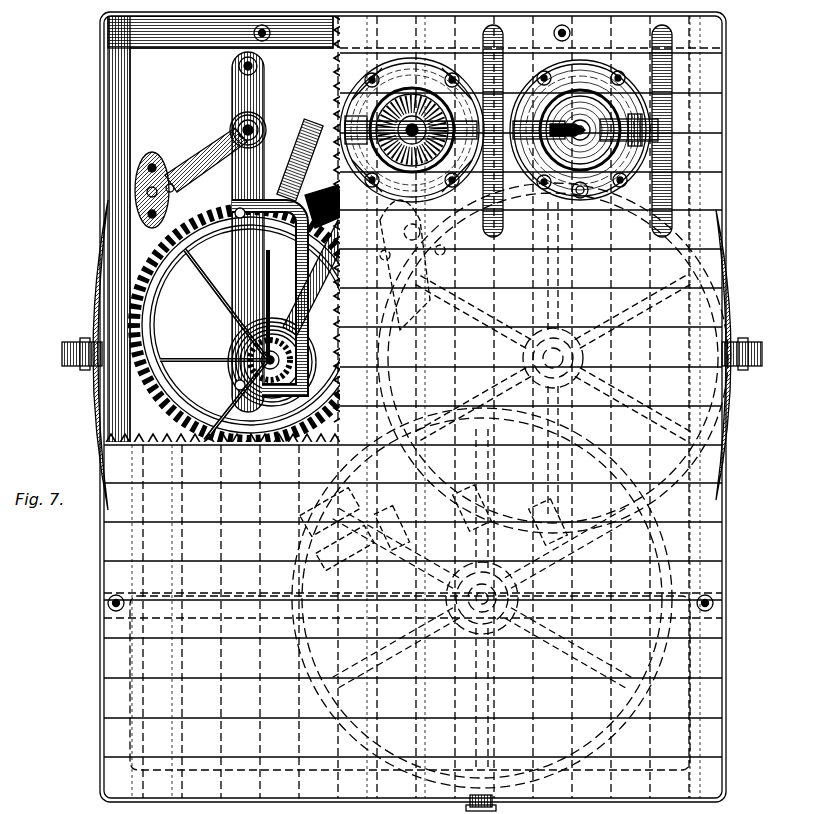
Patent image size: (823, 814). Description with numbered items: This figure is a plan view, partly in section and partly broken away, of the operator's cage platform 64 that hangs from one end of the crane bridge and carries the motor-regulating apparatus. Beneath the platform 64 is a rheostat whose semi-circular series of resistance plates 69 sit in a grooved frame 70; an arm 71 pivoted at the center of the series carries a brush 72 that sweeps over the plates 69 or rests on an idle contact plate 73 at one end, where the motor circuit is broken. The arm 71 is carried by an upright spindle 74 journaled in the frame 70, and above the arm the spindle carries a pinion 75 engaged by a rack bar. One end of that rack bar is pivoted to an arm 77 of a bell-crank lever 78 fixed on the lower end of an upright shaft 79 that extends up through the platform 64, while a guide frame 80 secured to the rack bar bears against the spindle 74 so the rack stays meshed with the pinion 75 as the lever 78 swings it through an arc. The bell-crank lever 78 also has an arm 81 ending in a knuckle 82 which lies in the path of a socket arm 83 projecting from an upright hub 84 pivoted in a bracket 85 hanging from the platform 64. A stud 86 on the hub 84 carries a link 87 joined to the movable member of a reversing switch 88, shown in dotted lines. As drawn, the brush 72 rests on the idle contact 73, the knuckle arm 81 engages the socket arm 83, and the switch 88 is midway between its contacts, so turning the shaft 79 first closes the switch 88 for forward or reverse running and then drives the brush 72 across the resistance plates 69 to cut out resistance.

The platform 64 is at (704, 653).
The resistance plates 69 is at (135, 262).
The frame 70 is at (90, 330).
The arm 71 is at (314, 298).
The brush 72 is at (292, 233).
The idle contact plate 73 is at (302, 170).
The upright spindle 74 is at (298, 392).
The pinion 75 is at (300, 362).
The arm 77 is at (265, 104).
The bell-crank lever 78 is at (263, 130).
The upright shaft 79 is at (232, 136).
The guide frame 80 is at (282, 268).
The arm 81 is at (206, 160).
The knuckle 82 is at (168, 178).
The socket arm 83 is at (165, 185).
The upright hub 84 is at (145, 190).
The bracket 85 is at (140, 172).
The stud 86 is at (145, 210).
The link 87 is at (186, 388).
The reversing switch 88 is at (143, 666).